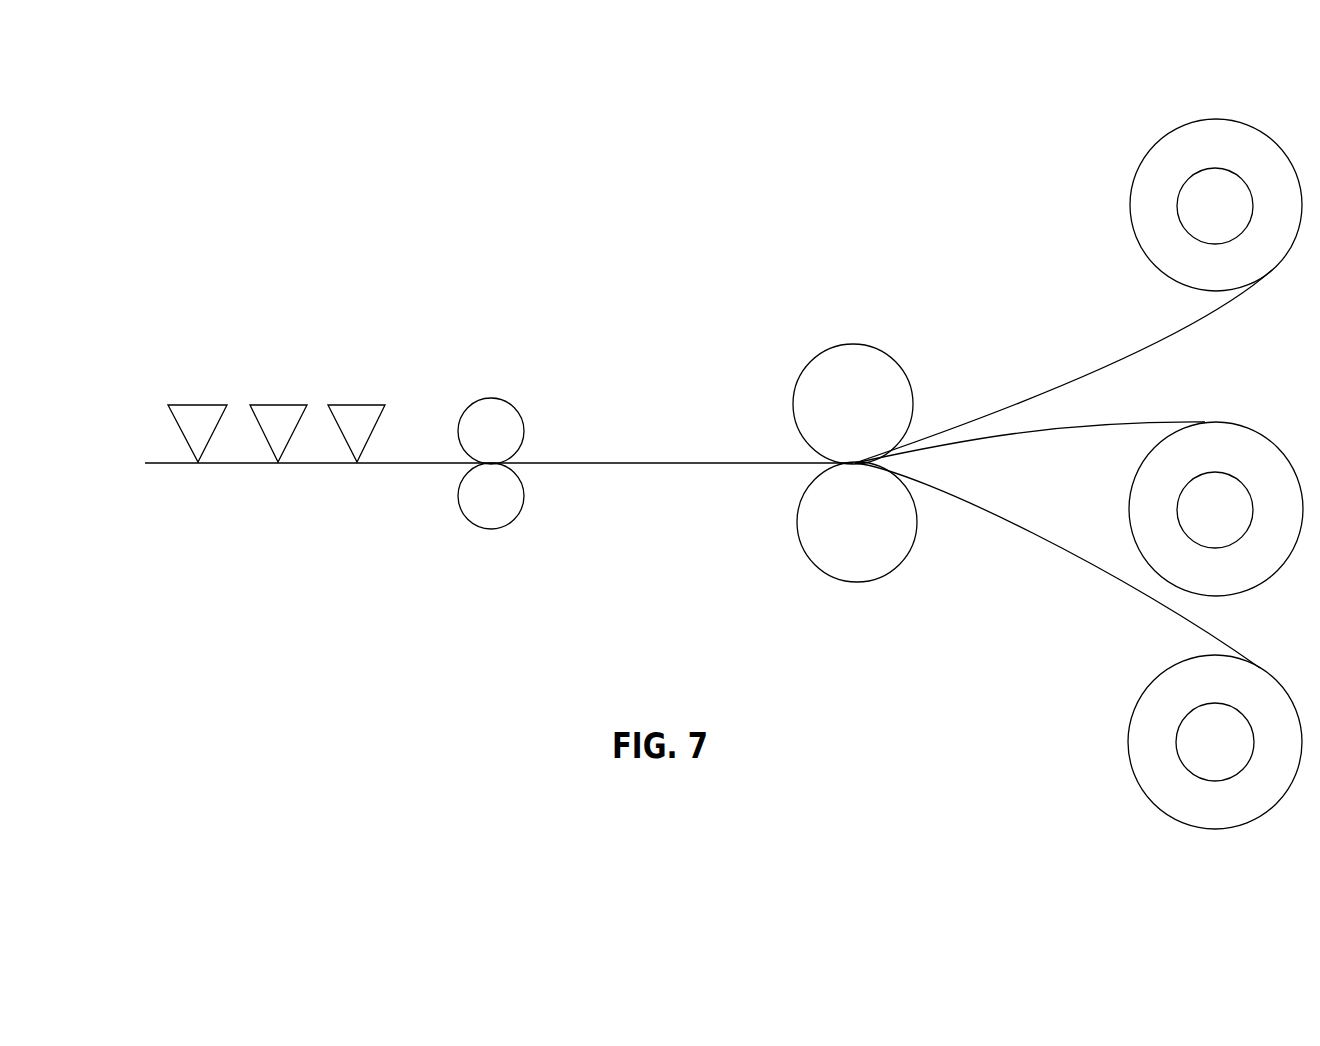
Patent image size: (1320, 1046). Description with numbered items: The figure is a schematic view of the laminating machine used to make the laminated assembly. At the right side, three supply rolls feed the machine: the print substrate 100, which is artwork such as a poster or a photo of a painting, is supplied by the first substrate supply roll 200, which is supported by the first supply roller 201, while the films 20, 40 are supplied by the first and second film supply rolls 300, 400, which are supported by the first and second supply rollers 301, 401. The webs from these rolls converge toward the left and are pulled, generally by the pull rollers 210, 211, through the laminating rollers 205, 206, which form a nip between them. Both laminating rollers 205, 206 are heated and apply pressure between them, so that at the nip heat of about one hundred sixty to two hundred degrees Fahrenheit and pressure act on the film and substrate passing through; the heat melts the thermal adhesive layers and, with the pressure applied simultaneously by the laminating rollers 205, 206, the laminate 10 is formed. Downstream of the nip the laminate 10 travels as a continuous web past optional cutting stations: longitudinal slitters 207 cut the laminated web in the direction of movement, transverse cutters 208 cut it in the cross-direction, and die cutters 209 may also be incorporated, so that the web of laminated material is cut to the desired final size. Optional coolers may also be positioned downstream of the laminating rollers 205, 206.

The laminate 10 is at (640, 460).
The film 20 is at (1094, 367).
The film 40 is at (1094, 560).
The print substrate 100 is at (1107, 418).
The first substrate supply roll 200 is at (1147, 520).
The first supply roller 201 is at (1220, 483).
The laminating roller 205 is at (840, 370).
The laminating roller 206 is at (840, 560).
The longitudinal slitter 207 is at (347, 412).
The transverse cutter 208 is at (283, 412).
The die cutter 209 is at (198, 412).
The pull roller 210 is at (495, 412).
The pull roller 211 is at (492, 505).
The first film supply roll 300 is at (1148, 217).
The first supply roller 301 is at (1222, 178).
The second film supply roll 400 is at (1152, 752).
The second supply roller 401 is at (1213, 758).